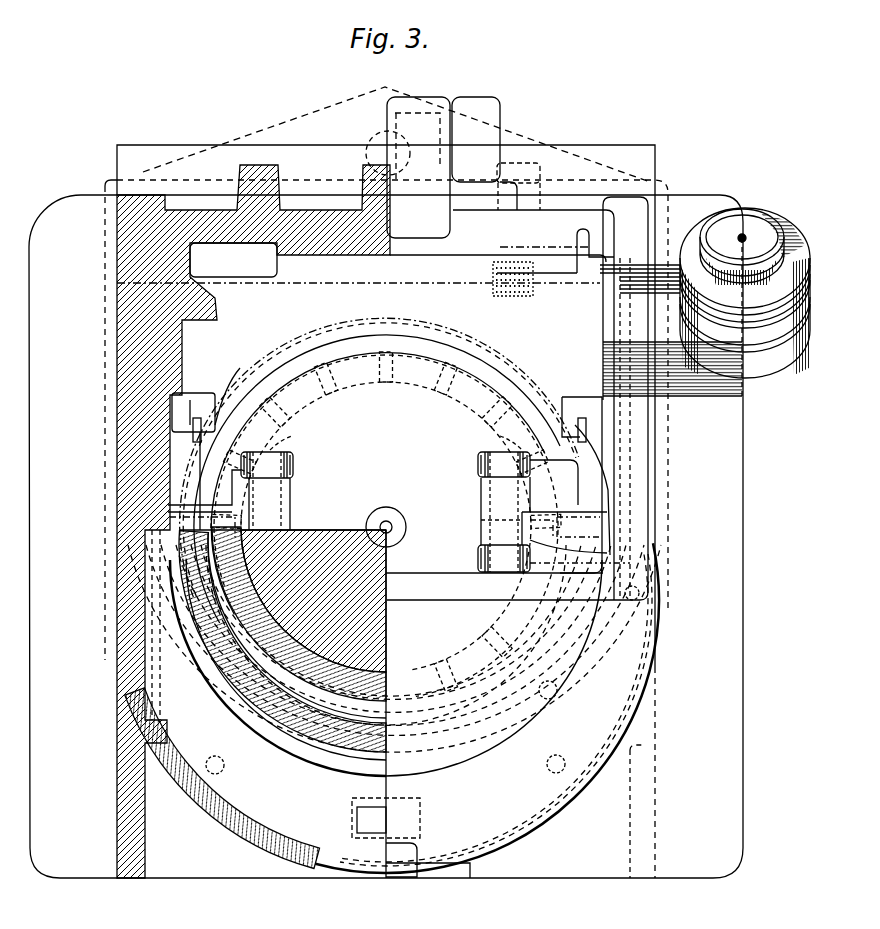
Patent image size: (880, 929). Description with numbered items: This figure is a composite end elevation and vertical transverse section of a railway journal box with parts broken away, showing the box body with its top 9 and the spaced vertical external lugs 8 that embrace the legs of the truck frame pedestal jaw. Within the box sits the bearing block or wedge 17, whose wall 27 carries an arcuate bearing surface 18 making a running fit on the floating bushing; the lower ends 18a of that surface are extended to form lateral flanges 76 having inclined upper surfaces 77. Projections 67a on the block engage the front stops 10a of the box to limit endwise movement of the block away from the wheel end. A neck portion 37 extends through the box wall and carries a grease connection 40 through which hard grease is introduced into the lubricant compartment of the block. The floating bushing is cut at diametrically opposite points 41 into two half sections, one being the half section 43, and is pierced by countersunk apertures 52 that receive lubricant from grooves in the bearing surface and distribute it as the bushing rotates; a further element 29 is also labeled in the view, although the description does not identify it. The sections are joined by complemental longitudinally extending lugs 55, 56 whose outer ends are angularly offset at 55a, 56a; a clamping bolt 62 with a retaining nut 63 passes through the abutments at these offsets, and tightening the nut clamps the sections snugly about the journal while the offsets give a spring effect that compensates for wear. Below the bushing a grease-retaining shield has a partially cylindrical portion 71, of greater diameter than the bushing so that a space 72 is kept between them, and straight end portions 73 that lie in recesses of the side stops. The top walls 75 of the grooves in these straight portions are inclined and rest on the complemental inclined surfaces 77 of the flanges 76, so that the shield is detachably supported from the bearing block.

The vertical external lugs 8 is at (738, 562).
The top 9 is at (298, 212).
The bearing block 17 is at (383, 246).
The arcuate bearing surface 18 is at (364, 277).
The front stops 10a is at (524, 262).
The projections 67a is at (572, 266).
The grease connection 40 is at (770, 232).
The neck portion 37 is at (672, 398).
The dial 29 is at (410, 345).
The wall 27 is at (360, 520).
The apertures 52 is at (282, 598).
The cut 41 is at (246, 538).
The half section 43 is at (358, 629).
The space 72 is at (390, 672).
The partially cylindrical portion 71 is at (283, 727).
The lateral flange 76 is at (670, 420).
The straight portions 73 is at (670, 447).
The inclined upper surfaces 77 is at (570, 420).
The clamping bolt 62 is at (486, 462).
The angular offset 55a is at (482, 486).
The angular offset 56a is at (482, 524).
The retaining nut 63 is at (478, 558).
The lower ends of the bearing surface 18a is at (396, 437).
The longitudinally extending lug 55 is at (556, 510).
The top walls of the grooves 75 is at (572, 470).
The longitudinally extending lug 56 is at (400, 537).